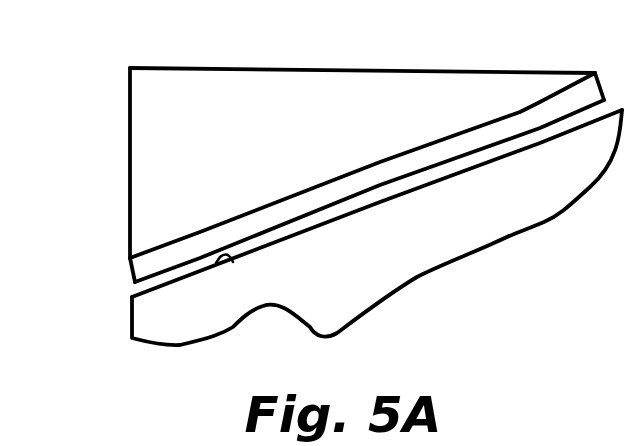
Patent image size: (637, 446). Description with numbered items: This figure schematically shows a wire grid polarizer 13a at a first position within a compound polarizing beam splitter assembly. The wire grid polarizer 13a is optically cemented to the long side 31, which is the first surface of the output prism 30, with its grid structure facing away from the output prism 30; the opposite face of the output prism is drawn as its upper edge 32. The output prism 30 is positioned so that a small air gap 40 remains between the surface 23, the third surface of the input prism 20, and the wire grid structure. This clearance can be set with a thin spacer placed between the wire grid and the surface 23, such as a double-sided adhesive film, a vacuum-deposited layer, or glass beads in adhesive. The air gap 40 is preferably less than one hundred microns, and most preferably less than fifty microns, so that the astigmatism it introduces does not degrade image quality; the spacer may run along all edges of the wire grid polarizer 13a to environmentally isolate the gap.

The top plate of body 32 is at (255, 80).
The output prism 30 is at (140, 138).
The long side 31 is at (302, 192).
The wire grid polarizer 13a is at (137, 268).
The air gap 40 is at (133, 292).
The input prism 20 is at (505, 223).
The surface 23 is at (233, 262).